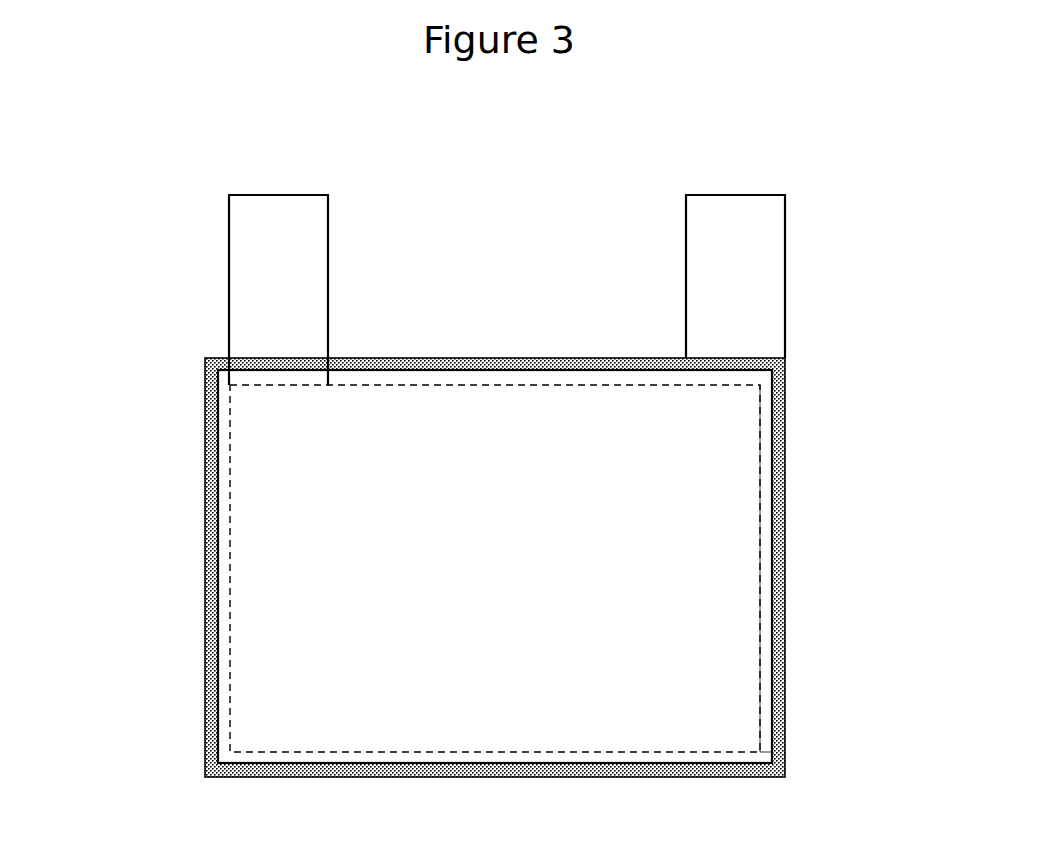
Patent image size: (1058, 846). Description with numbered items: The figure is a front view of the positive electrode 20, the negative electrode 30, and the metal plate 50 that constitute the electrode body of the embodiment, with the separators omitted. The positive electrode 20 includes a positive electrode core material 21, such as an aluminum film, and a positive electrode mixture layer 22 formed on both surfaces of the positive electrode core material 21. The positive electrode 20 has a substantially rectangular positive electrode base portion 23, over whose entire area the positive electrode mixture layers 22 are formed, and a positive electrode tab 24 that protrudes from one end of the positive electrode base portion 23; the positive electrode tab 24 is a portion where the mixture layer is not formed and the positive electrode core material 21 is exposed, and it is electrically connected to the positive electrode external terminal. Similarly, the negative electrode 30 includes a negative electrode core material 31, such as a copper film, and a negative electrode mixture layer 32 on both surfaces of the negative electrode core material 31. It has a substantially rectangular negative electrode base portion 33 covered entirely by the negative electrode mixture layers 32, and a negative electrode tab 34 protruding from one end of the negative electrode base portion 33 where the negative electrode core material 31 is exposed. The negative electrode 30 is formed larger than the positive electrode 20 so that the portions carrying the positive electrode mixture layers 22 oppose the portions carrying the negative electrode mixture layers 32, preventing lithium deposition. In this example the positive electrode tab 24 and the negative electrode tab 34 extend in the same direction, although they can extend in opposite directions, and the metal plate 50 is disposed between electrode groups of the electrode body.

The positive electrode 20 is at (260, 264).
The positive electrode core material 21 is at (192, 290).
The positive electrode tab 24 is at (257, 282).
The positive electrode mixture layer 22 is at (408, 568).
The positive electrode base portion 23 is at (257, 517).
The negative electrode 30 is at (813, 250).
The negative electrode core material 31 is at (813, 276).
The negative electrode tab 34 is at (760, 286).
The negative electrode mixture layer 32 is at (850, 568).
The negative electrode base portion 33 is at (775, 518).
The metal plate 50 is at (502, 380).